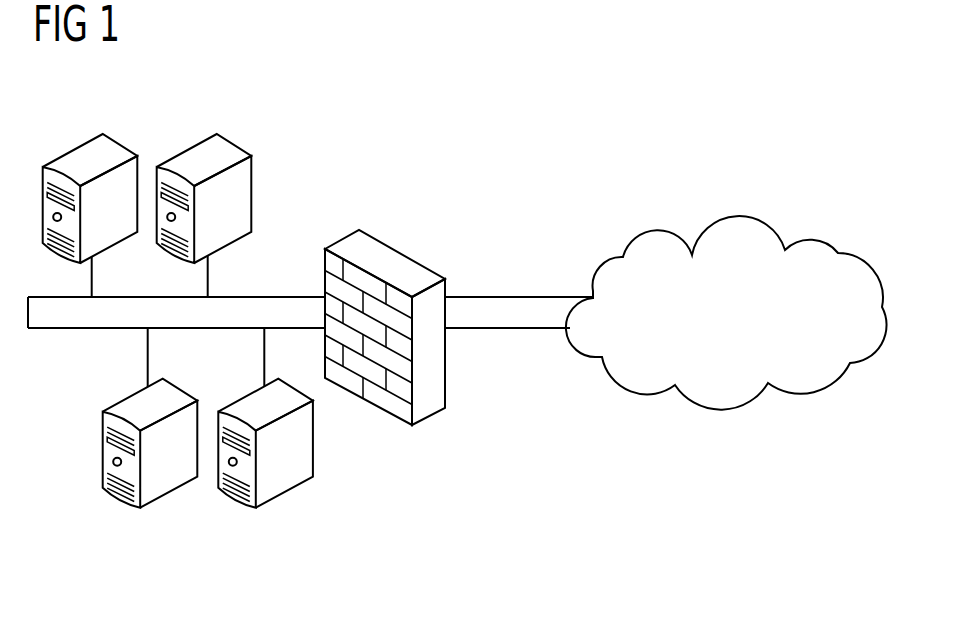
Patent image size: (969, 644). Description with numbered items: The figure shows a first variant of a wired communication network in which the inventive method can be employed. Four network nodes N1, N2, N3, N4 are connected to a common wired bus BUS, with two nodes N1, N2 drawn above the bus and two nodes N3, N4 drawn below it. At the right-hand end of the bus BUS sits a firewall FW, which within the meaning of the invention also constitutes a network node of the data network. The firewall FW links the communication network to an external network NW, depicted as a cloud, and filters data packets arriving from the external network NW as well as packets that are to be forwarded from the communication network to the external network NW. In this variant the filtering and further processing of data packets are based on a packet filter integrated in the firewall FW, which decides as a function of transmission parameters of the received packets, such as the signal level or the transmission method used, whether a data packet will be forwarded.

The network node N1 is at (121, 143).
The network node N2 is at (234, 143).
The network node N3 is at (170, 495).
The network node N4 is at (287, 495).
The firewall FW is at (390, 260).
The external network NW is at (726, 313).
The network bus BUS is at (310, 312).